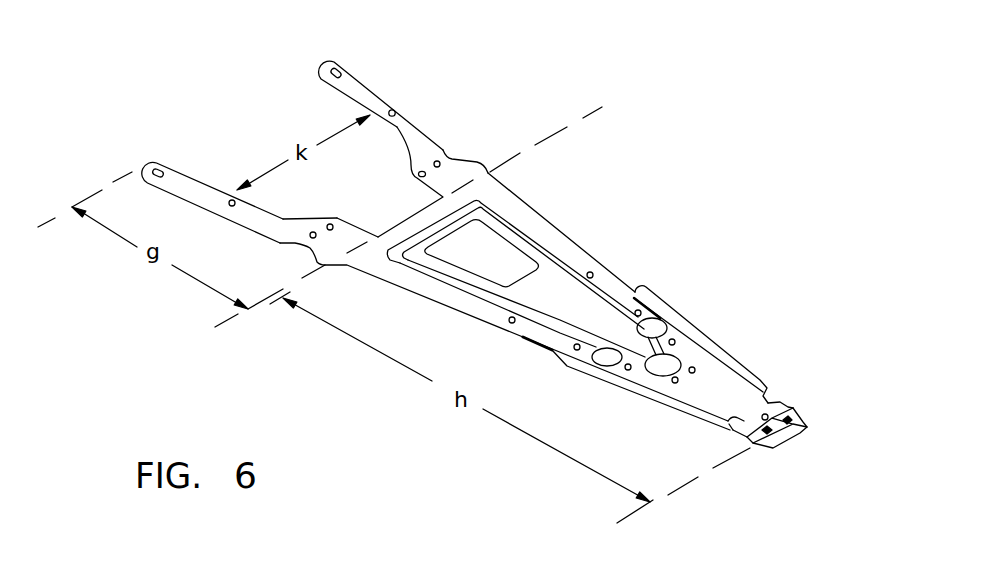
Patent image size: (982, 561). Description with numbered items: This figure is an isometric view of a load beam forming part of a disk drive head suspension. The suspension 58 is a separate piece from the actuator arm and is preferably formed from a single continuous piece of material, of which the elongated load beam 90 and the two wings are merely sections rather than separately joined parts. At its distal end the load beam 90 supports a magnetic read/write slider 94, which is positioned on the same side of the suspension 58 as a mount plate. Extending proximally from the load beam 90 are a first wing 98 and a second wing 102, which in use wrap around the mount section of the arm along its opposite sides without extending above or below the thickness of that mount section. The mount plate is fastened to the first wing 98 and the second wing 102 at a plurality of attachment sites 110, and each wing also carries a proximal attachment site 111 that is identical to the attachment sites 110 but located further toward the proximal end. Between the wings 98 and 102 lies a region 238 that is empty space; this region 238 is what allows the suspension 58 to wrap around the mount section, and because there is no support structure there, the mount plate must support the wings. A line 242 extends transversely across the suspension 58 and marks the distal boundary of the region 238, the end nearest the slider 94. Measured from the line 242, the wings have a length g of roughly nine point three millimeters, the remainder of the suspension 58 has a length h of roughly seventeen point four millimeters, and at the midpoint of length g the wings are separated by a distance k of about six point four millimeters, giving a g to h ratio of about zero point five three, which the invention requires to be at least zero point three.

The suspension 58 is at (578, 216).
The load beam 90 is at (610, 273).
The magnetic read/write slider 94 is at (808, 426).
The first wing 98 is at (184, 179).
The second wing 102 is at (367, 90).
The attachment sites 110 is at (423, 170).
The proximal attachment site 111 is at (399, 109).
The region 238 is at (382, 201).
The line 242 is at (585, 117).